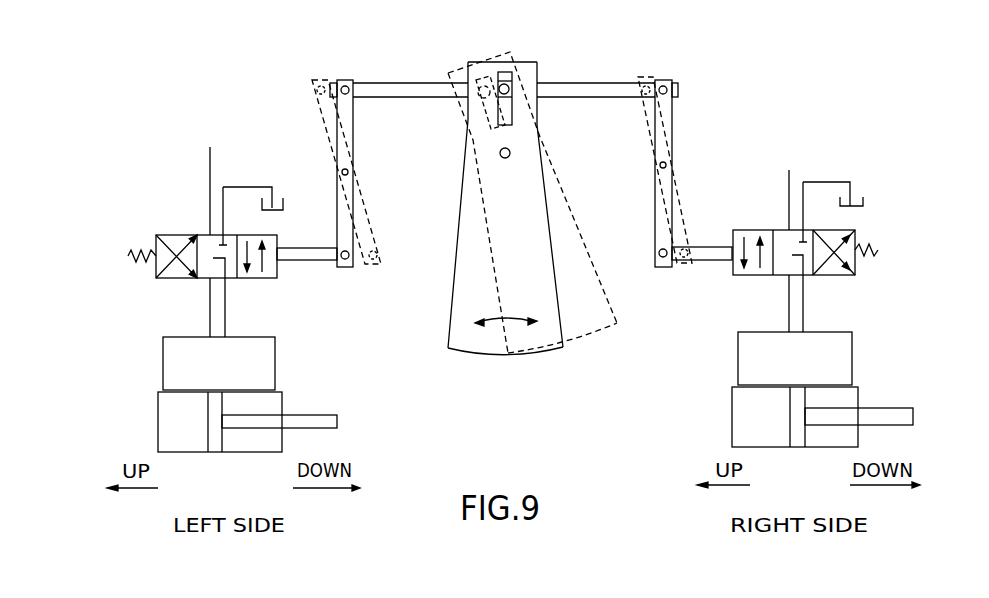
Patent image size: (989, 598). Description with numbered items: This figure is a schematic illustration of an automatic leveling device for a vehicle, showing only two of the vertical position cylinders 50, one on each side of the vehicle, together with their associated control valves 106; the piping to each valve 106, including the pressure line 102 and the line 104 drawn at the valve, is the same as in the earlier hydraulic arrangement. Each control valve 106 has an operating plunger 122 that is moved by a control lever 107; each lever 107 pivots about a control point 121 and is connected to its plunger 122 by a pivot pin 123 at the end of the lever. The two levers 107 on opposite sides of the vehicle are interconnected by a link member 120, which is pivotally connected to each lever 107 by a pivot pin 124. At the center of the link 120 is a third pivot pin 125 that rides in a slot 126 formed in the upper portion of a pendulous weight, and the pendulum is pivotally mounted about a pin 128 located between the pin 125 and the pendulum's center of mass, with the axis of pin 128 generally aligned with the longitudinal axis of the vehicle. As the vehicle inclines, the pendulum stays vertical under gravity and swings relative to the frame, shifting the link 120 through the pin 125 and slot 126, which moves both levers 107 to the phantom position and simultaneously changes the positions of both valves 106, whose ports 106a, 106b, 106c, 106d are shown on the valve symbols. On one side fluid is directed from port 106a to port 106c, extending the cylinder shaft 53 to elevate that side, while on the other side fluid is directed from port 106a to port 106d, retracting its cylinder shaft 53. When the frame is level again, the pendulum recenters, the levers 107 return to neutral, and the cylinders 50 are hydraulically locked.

The vertical position cylinder 50 is at (237, 440).
The cylinder shaft 53 is at (307, 418).
The pressure fluid source line 102 is at (283, 202).
The valve actuating line 104 is at (208, 160).
The control valve 106 is at (177, 235).
The port 106a is at (203, 232).
The valve passage 106b is at (225, 237).
The port 106c is at (207, 278).
The port 106d is at (227, 278).
The control lever 107 is at (352, 135).
The link member 120 is at (420, 83).
The control point 121 is at (348, 172).
The operating plunger 122 is at (317, 260).
The pivot pin 123 is at (350, 247).
The pivot pin 124 is at (344, 80).
The third pivot pin 125 is at (507, 78).
The slot 126 is at (510, 110).
The pin 128 is at (500, 153).